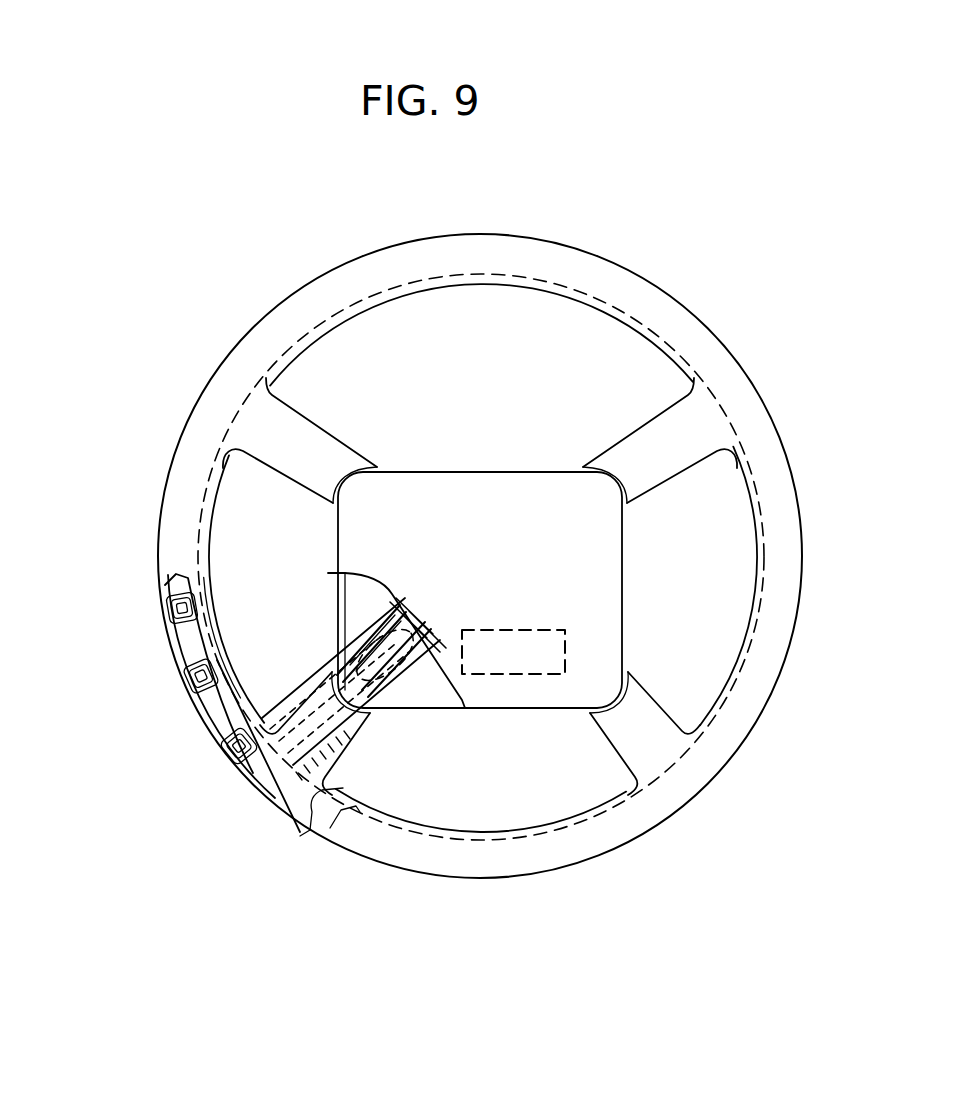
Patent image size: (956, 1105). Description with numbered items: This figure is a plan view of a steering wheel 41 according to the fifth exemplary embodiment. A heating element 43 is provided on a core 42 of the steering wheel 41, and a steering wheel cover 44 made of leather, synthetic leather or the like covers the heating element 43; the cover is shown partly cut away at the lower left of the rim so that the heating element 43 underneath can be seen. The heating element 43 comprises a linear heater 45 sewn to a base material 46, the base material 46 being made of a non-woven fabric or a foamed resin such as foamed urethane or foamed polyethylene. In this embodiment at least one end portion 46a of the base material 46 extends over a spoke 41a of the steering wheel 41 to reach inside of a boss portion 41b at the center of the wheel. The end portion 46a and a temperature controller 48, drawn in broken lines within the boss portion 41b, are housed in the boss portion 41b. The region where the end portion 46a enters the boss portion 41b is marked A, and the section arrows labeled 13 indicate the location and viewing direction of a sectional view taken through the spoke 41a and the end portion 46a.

The steering wheel 41 is at (750, 402).
The spoke 41a is at (300, 708).
The boss portion 41b is at (595, 585).
The core 42 is at (175, 597).
The heating element 43 is at (217, 715).
The steering wheel cover 44 is at (192, 465).
The linear heater 45 is at (233, 752).
The base material 46 is at (268, 790).
The end portion 46a is at (340, 743).
The temperature controller 48 is at (553, 653).
The section line 13 is at (265, 707).
The region A is at (410, 680).